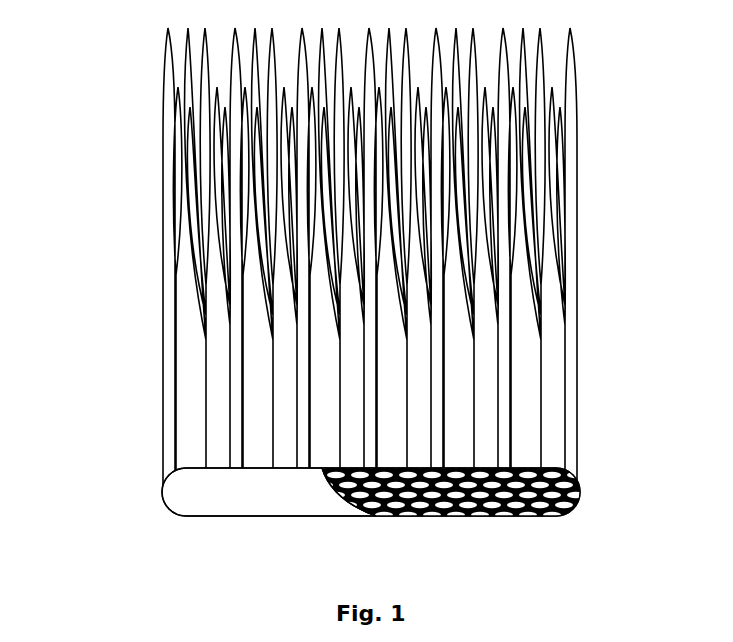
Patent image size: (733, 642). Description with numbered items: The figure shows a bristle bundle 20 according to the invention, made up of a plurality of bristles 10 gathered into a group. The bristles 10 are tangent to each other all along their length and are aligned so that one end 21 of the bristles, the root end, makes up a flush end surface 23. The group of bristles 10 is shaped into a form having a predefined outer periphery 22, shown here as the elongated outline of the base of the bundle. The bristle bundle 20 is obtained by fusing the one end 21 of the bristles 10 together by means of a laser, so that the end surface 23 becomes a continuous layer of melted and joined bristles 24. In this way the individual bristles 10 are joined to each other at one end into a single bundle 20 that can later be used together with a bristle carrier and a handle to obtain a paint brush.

The bristles 10 is at (568, 235).
The bristle bundle 20 is at (100, 152).
The one end of the bristles 21 is at (481, 518).
The predefined outer periphery 22 is at (364, 523).
The flush end surface 23 is at (408, 518).
The continuous layer of melted and joined bristles 24 is at (273, 506).